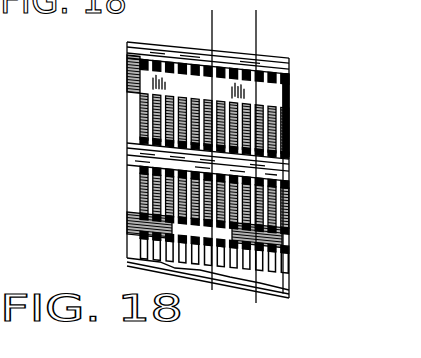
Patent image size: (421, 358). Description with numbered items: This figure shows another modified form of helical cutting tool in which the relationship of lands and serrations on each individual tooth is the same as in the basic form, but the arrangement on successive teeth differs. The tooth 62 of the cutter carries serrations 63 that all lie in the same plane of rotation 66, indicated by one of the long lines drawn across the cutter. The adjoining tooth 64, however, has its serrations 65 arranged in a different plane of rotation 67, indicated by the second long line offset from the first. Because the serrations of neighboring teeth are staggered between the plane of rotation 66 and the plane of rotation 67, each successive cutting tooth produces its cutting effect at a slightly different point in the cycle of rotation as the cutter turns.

The tooth 62 is at (287, 97).
The serrations 63 is at (258, 68).
The adjoining tooth 64 is at (287, 233).
The serrations 65 is at (287, 243).
The plane of rotation 66 is at (257, 12).
The plane of rotation 67 is at (212, 18).